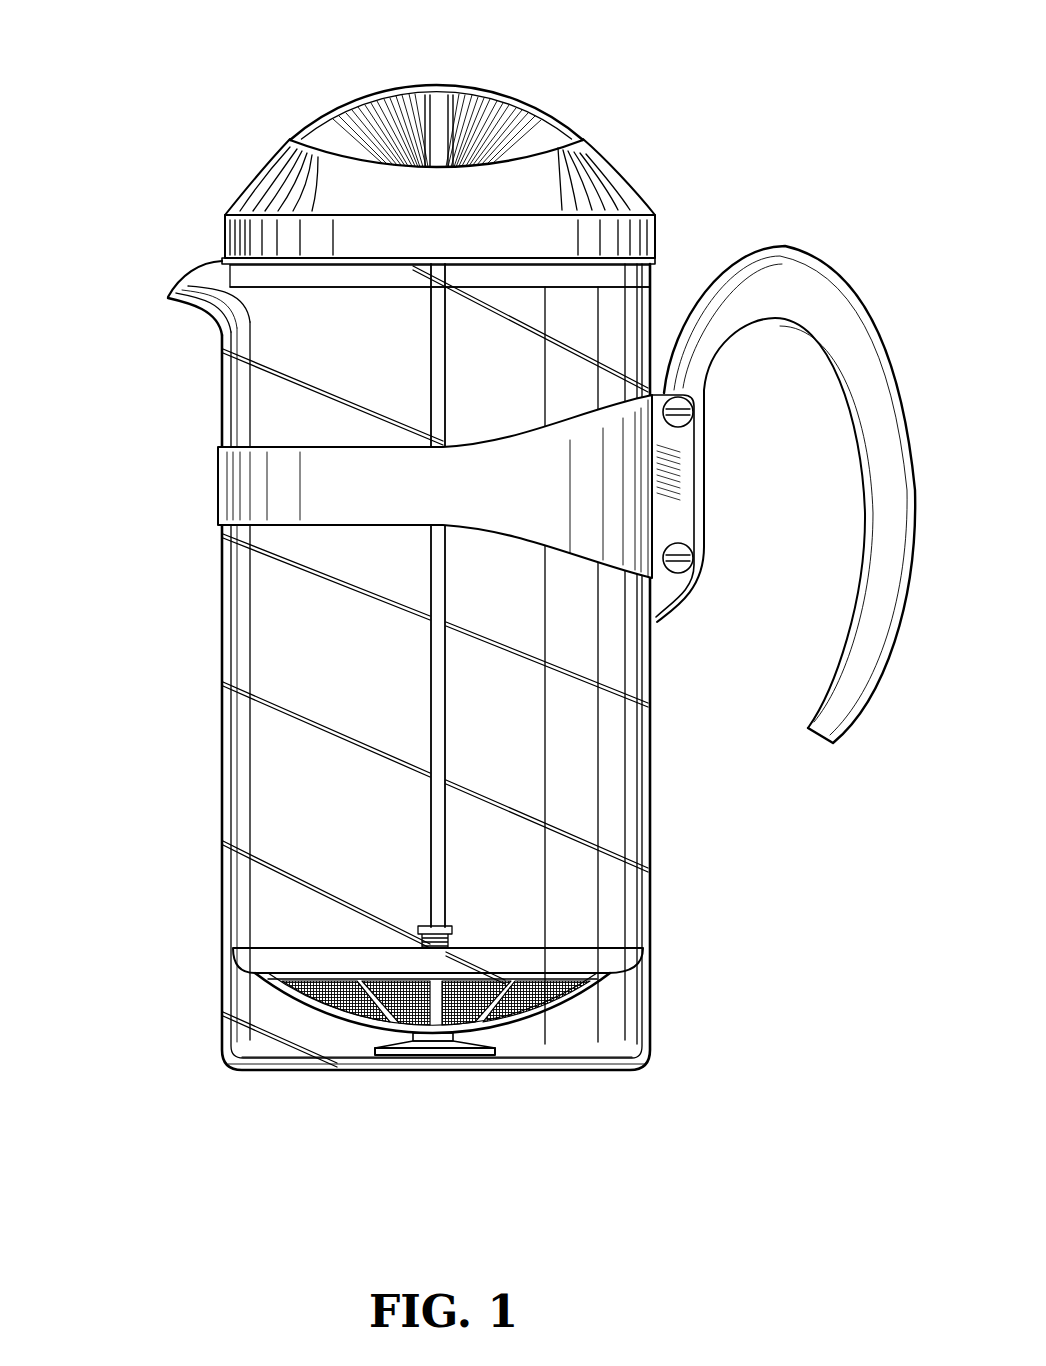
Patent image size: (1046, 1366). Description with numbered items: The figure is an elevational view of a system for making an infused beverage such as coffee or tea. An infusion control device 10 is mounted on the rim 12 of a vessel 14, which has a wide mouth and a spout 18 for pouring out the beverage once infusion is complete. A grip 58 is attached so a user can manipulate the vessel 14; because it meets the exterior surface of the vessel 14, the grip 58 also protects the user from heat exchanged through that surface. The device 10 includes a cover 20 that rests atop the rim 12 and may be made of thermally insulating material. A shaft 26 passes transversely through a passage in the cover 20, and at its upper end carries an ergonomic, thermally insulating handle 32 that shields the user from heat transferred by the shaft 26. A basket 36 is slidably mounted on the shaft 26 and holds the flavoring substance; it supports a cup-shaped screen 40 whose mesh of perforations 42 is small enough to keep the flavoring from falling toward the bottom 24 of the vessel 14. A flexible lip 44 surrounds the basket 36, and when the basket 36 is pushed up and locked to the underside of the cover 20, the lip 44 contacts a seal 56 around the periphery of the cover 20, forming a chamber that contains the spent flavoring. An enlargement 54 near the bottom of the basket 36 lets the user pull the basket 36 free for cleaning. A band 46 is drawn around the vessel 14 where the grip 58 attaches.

The infusion control device 10 is at (628, 158).
The rim 12 is at (532, 257).
The vessel 14 is at (655, 735).
The spout 18 is at (163, 278).
The cover 20 is at (238, 189).
The bottom 24 is at (270, 1050).
The shaft 26 is at (438, 672).
The handle 32 is at (487, 98).
The basket 36 is at (604, 997).
The screen 40 is at (530, 1007).
The perforations 42 is at (560, 1067).
The lip 44 is at (262, 963).
The band 46 is at (234, 620).
The enlargement 54 is at (428, 1043).
The second seal 56 is at (570, 280).
The grip 58 is at (827, 308).